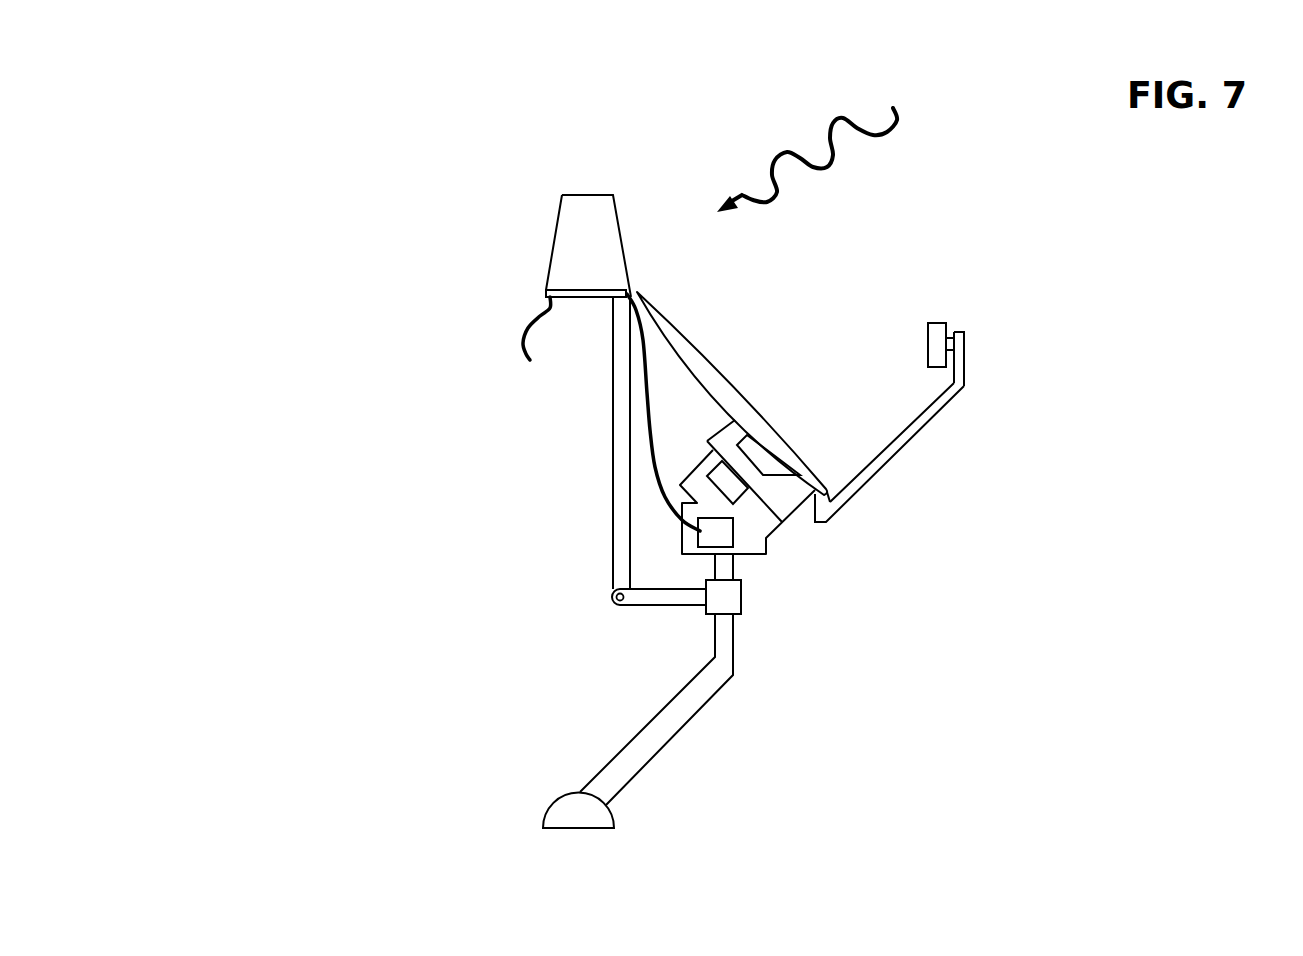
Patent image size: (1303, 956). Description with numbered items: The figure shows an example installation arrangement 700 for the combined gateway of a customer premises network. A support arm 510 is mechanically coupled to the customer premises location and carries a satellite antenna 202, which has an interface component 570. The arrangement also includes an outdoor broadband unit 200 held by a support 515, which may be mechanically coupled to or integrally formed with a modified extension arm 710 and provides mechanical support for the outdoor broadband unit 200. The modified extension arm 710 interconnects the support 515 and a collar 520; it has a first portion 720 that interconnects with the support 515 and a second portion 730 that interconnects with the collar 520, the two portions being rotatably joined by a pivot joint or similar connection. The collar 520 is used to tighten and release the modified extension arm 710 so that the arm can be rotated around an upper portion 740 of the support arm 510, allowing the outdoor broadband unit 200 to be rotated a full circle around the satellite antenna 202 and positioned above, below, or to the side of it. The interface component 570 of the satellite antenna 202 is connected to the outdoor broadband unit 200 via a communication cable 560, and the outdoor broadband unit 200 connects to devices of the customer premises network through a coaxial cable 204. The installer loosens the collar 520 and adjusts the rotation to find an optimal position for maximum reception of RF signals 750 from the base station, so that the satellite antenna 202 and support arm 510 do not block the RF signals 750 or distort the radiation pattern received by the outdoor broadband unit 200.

The installation arrangement 700 is at (237, 56).
The outdoor broadband unit 200 is at (562, 238).
The coaxial cable 204 is at (524, 345).
The support 515 is at (591, 298).
The communication cable 560 is at (647, 392).
The satellite antenna 202 is at (716, 366).
The modified extension arm 710 is at (612, 503).
The first portion 720 is at (612, 572).
The second portion 730 is at (665, 593).
The collar 520 is at (736, 597).
The interface component 570 is at (722, 537).
The upper portion 740 is at (722, 563).
The support arm 510 is at (648, 737).
The RF signals 750 is at (822, 170).